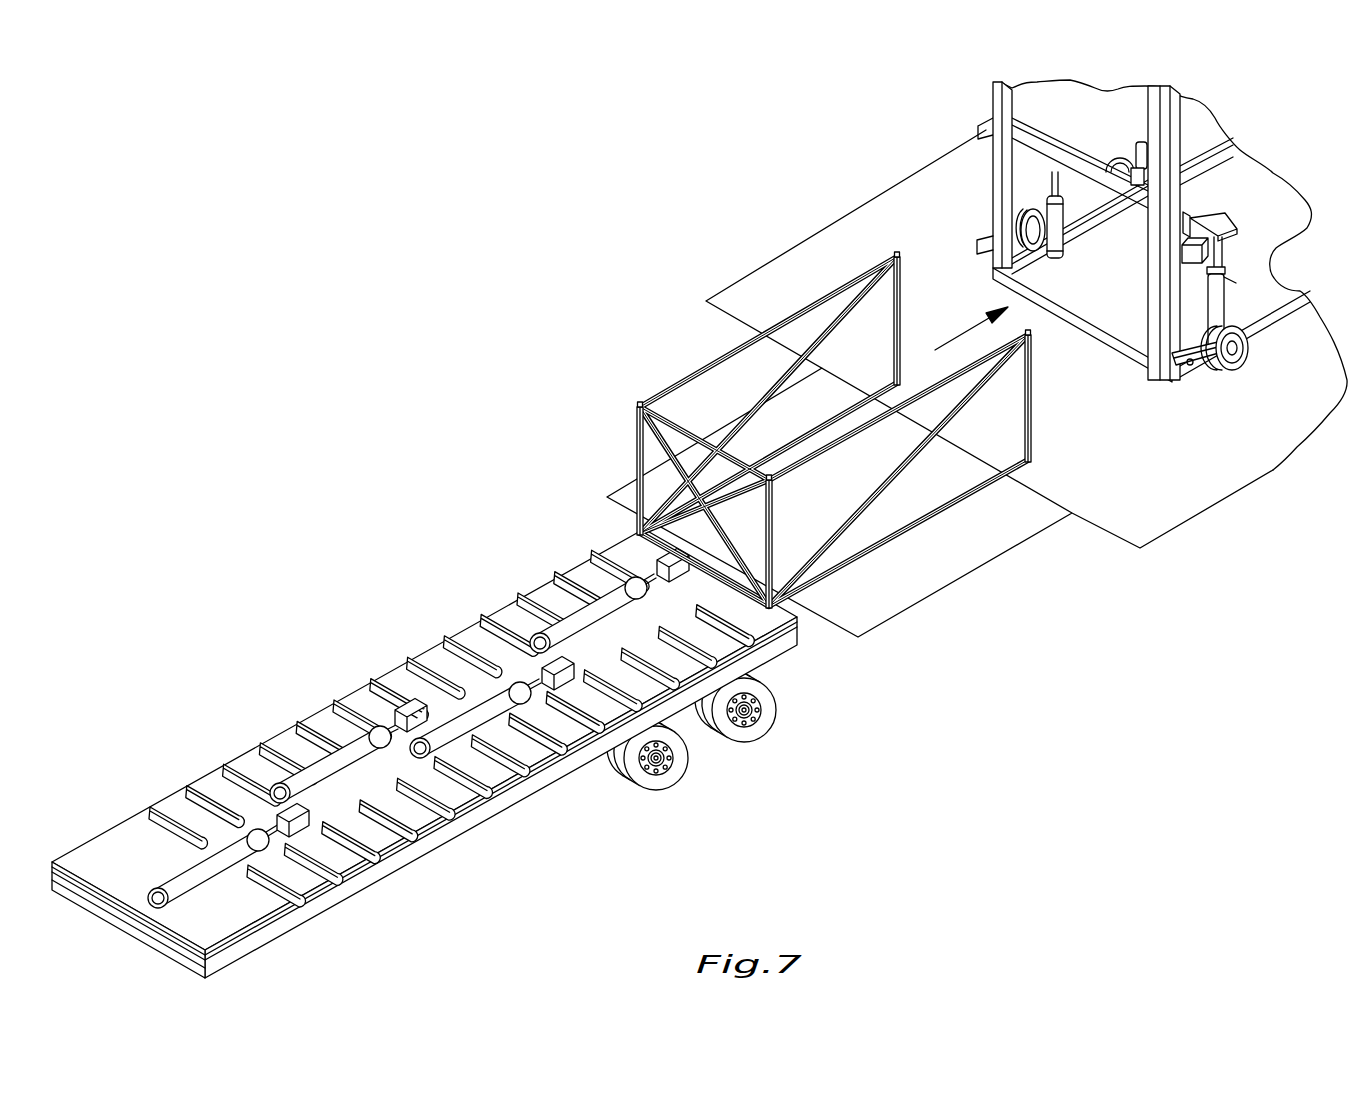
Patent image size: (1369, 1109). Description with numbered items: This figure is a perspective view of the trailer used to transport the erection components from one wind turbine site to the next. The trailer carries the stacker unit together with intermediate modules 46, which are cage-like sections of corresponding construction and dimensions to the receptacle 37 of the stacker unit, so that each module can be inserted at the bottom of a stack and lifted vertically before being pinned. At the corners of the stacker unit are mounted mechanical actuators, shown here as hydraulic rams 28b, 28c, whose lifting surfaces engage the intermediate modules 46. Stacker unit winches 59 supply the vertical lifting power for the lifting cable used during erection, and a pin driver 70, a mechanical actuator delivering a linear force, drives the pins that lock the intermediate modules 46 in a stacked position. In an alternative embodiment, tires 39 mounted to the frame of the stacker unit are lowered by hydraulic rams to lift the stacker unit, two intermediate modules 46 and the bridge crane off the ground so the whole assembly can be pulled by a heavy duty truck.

The intermediate module 46 is at (708, 368).
The stacker unit winch 59 is at (1030, 217).
The hydraulic ram 28c is at (1063, 213).
The hydraulic ram 28b is at (1226, 220).
The pin driver 70 is at (1190, 215).
The receptacle 37 is at (1150, 281).
The tire 39 is at (1240, 360).